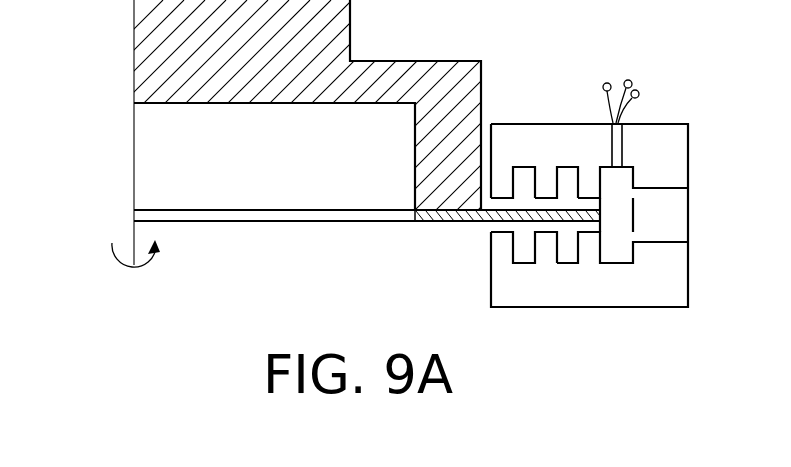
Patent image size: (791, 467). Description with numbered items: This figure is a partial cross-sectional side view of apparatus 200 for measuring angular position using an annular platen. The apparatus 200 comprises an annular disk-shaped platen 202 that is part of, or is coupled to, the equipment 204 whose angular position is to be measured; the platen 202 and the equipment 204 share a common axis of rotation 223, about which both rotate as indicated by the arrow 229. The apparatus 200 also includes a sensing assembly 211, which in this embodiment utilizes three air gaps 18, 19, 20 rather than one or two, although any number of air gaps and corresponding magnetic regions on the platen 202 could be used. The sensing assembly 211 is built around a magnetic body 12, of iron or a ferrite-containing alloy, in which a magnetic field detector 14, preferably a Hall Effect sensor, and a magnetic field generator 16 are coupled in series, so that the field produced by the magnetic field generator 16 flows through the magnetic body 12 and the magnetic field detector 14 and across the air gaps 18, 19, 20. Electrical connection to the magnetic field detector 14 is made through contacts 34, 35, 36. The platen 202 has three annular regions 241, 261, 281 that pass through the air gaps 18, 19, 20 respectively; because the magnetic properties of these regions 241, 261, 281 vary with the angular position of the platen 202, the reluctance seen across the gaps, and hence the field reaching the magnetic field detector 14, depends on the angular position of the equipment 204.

The apparatus 200 is at (135, 338).
The equipment 204 is at (351, 19).
The axis of rotation 223 is at (133, 163).
The arrow 229 is at (155, 268).
The annular disk-shaped platen 202 is at (415, 213).
The annular region 241 is at (497, 223).
The sensing assembly 211 is at (588, 309).
The air gap 18 is at (503, 196).
The air gap 19 is at (542, 196).
The air gap 20 is at (580, 196).
The annular region 261 is at (544, 234).
The annular region 281 is at (588, 233).
The magnetic field detector 14 is at (616, 142).
The magnetic field generator 16 is at (676, 227).
The magnetic body 12 is at (676, 288).
The contact 34 is at (608, 83).
The contact 35 is at (632, 83).
The contact 36 is at (639, 94).